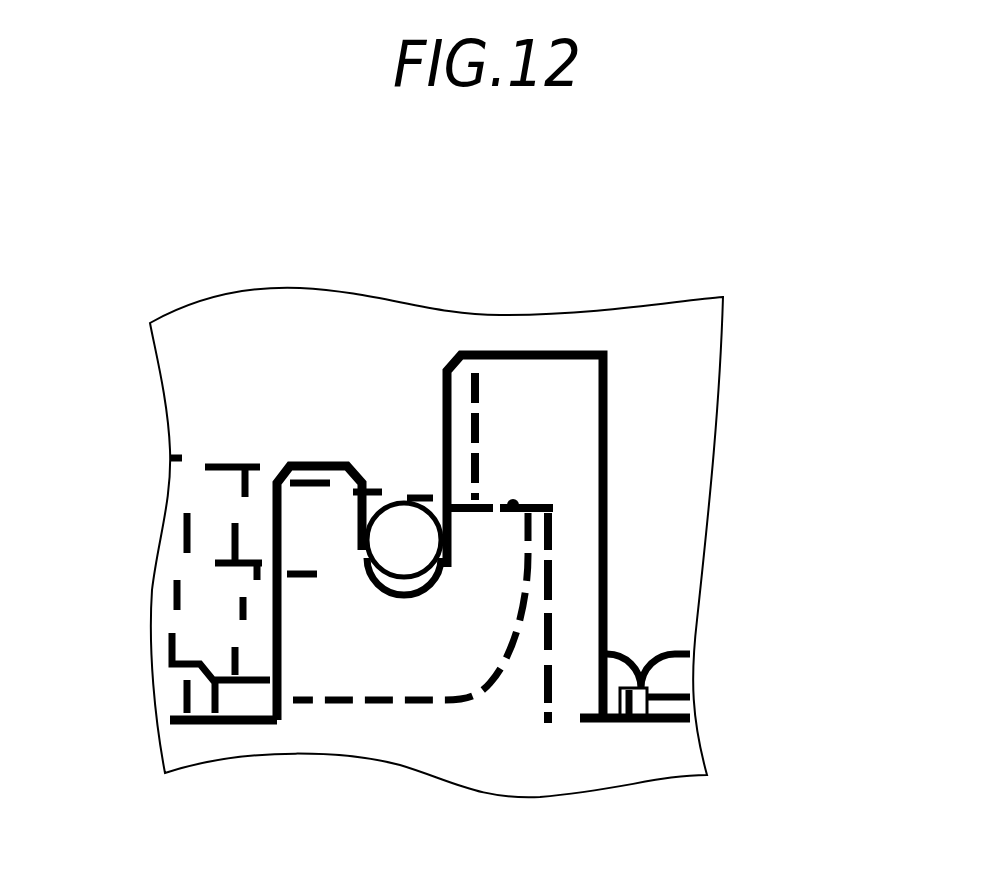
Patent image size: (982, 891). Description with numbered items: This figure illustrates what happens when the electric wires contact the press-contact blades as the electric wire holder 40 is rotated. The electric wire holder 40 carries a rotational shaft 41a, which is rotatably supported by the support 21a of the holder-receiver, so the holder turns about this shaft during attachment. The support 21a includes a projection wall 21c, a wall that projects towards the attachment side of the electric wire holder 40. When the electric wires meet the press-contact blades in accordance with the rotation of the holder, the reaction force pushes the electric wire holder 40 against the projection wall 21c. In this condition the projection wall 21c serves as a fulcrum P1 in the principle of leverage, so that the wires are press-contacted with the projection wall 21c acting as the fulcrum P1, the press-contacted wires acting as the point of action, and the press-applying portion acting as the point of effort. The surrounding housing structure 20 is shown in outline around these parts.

The housing 20 is at (673, 753).
The support 21a is at (580, 577).
The projection wall 21c is at (540, 410).
The electric wire holder 40 is at (228, 466).
The rotational shaft 41a is at (405, 553).
The fulcrum P1 is at (516, 500).